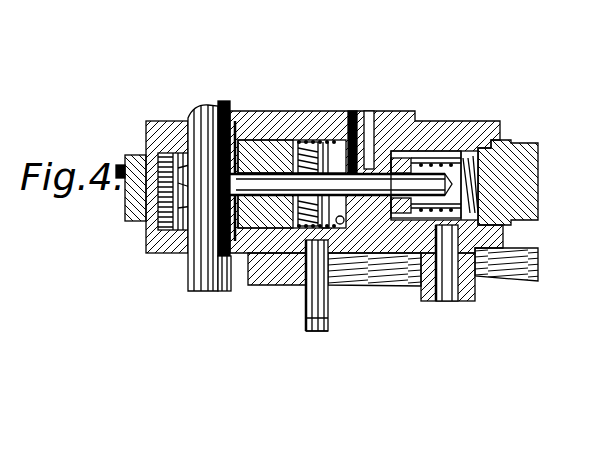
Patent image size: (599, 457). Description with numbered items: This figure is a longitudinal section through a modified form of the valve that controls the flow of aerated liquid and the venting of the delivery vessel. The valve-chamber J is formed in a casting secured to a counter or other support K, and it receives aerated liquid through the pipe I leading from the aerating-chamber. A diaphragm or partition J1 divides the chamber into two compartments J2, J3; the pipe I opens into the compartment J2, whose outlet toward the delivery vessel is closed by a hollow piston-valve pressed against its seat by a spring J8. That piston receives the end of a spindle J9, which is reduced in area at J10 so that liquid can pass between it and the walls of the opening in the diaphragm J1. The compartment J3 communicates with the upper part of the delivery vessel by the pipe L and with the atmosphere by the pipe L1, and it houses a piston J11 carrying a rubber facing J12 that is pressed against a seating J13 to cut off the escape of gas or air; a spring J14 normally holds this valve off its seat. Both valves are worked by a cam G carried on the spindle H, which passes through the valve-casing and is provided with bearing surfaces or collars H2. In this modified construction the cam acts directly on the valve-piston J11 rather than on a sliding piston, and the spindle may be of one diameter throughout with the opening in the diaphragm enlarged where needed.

The valve-chamber J is at (490, 112).
The compartment J2 is at (484, 114).
The support K is at (518, 274).
The pipe I is at (437, 294).
The diaphragm or partition J1 is at (470, 278).
The compartment J3 is at (299, 304).
The spindle J9 is at (296, 332).
The pipe L is at (113, 150).
The cam G is at (178, 114).
The bearing surfaces or collars H2 is at (245, 108).
The spindle H is at (216, 286).
The pipe L1 is at (362, 242).
The piston J11 is at (285, 108).
The reduced portion of spindle J10 is at (372, 256).
The seating J13 is at (312, 228).
The spring J14 is at (333, 108).
The spring J8 is at (437, 108).
The rubber facing J12 is at (421, 110).